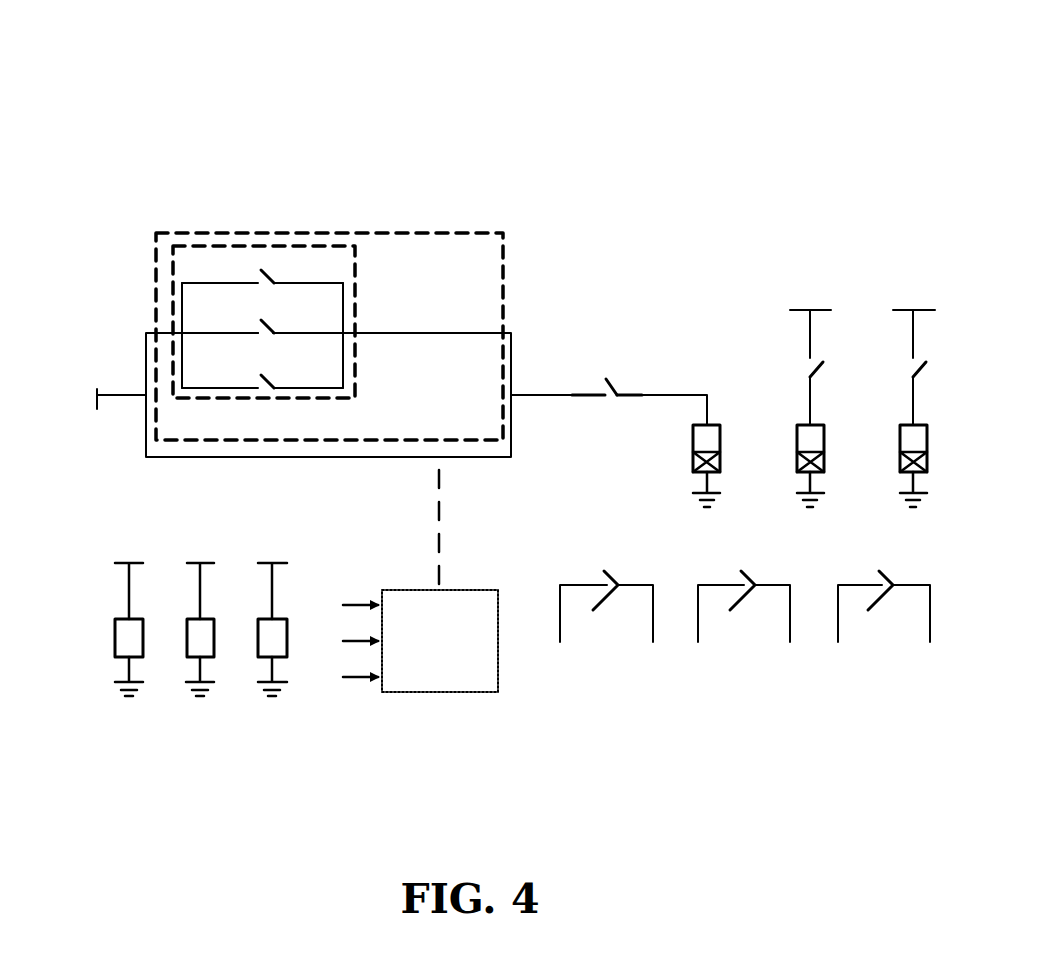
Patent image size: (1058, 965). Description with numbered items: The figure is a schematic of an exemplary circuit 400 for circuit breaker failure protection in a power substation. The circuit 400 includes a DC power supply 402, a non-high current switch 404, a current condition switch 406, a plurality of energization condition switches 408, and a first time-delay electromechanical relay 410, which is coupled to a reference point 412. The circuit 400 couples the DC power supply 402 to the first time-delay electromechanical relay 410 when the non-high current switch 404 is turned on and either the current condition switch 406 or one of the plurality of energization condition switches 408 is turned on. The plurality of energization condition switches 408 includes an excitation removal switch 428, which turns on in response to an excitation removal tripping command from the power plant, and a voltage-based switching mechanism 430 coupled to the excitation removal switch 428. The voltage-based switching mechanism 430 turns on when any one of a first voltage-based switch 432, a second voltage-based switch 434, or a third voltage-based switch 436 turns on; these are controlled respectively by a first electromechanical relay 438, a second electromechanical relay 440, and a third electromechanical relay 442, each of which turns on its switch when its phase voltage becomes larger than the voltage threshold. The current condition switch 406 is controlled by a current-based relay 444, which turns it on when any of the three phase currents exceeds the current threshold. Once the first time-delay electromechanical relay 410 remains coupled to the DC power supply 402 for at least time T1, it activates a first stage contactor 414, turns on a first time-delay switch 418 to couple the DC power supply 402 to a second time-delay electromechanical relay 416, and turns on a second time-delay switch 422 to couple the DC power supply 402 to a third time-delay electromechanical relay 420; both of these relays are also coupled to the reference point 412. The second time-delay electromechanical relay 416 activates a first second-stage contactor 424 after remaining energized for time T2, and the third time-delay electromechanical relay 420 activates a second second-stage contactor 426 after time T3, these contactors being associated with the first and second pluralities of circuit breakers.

The circuit 400 is at (776, 158).
The DC power supply 402 is at (95, 388).
The non-high current switch 404 is at (612, 398).
The current condition switch 406 is at (437, 442).
The plurality of energization condition switches 408 is at (493, 232).
The first time-delay electromechanical relay 410 is at (688, 466).
The reference point 412 is at (713, 503).
The first stage contactor 414 is at (606, 634).
The second time-delay electromechanical relay 416 is at (797, 447).
The first time-delay switch 418 is at (812, 365).
The third time-delay electromechanical relay 420 is at (900, 447).
The second time-delay switch 422 is at (913, 365).
The first second-stage contactor 424 is at (745, 634).
The second second-stage contactor 426 is at (890, 634).
The excitation removal switch 428 is at (437, 318).
The voltage-based switching mechanism 430 is at (353, 398).
The first voltage-based switch 432 is at (263, 270).
The second voltage-based switch 434 is at (263, 320).
The third voltage-based switch 436 is at (263, 375).
The first electromechanical relay 438 is at (115, 619).
The second electromechanical relay 440 is at (187, 619).
The third electromechanical relay 442 is at (258, 619).
The current-based relay 444 is at (382, 692).